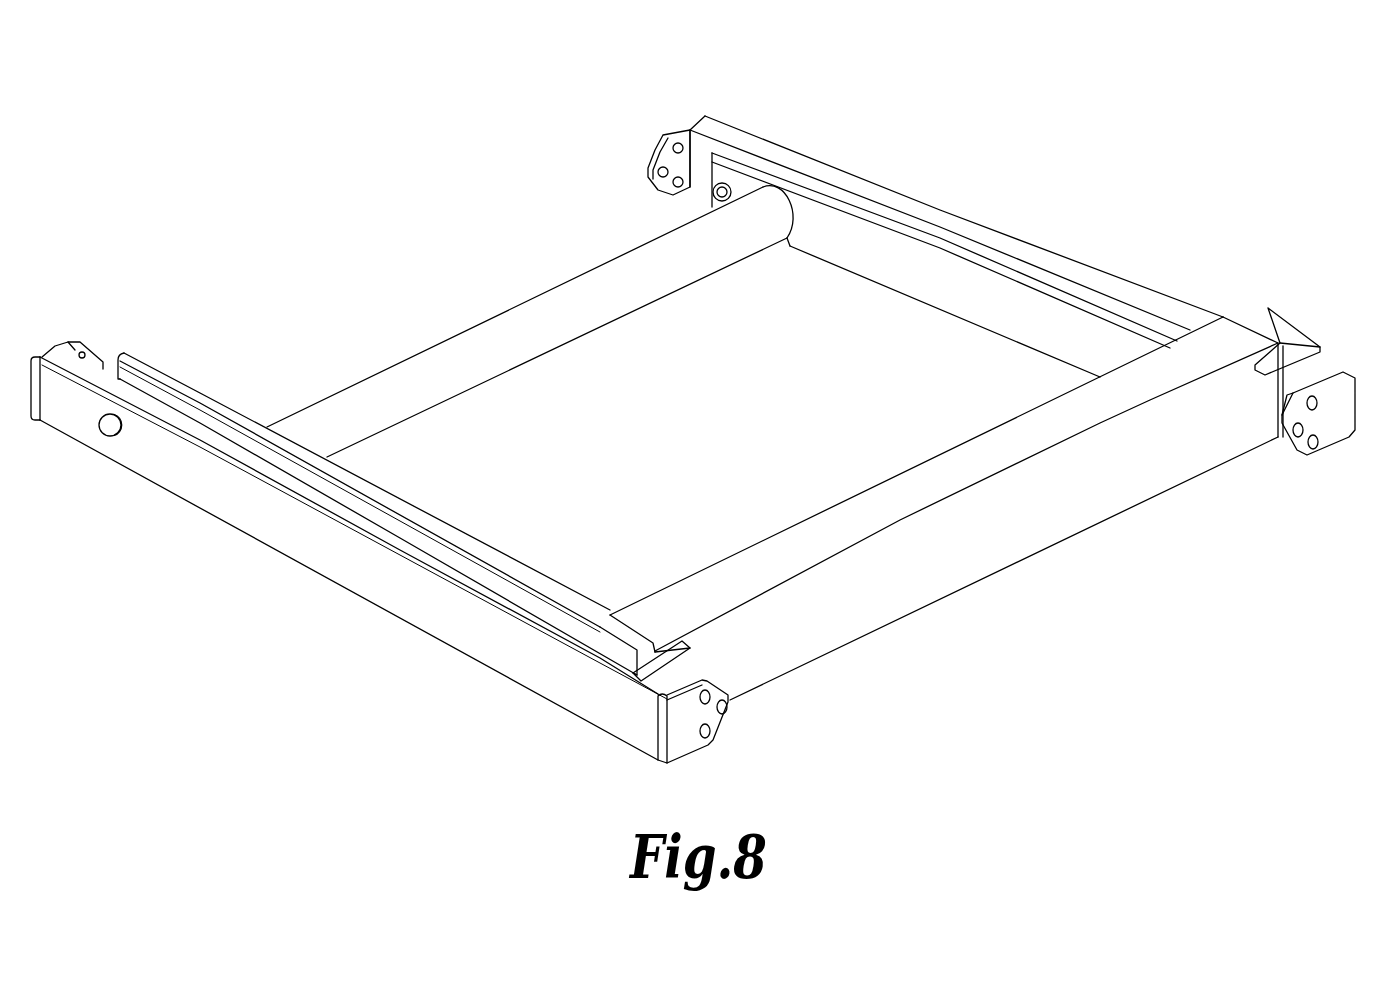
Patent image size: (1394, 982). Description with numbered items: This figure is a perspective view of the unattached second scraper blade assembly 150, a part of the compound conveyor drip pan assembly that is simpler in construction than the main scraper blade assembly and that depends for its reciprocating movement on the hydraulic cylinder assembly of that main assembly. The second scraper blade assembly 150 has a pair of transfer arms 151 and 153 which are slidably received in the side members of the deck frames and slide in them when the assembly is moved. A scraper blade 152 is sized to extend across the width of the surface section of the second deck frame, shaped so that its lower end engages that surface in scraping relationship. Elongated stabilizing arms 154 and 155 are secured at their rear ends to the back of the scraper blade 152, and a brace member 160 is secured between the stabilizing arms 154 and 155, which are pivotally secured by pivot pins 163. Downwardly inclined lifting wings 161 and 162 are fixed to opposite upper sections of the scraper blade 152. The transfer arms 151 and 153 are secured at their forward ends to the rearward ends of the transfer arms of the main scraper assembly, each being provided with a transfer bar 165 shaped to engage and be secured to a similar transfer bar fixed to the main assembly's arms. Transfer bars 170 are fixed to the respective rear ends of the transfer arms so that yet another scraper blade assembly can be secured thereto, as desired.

The second scraper blade assembly 150 is at (1013, 214).
The transfer arm 151 is at (907, 203).
The scraper blade 152 is at (1064, 505).
The transfer arm 153 is at (297, 540).
The stabilizing arm 154 is at (883, 262).
The stabilizing arm 155 is at (243, 417).
The brace member 160 is at (518, 328).
The lifting wing 161 is at (1292, 334).
The lifting wing 162 is at (620, 643).
The pivot pin 163 is at (110, 436).
The transfer bar 165 is at (661, 140).
The transfer bar 170 is at (686, 727).